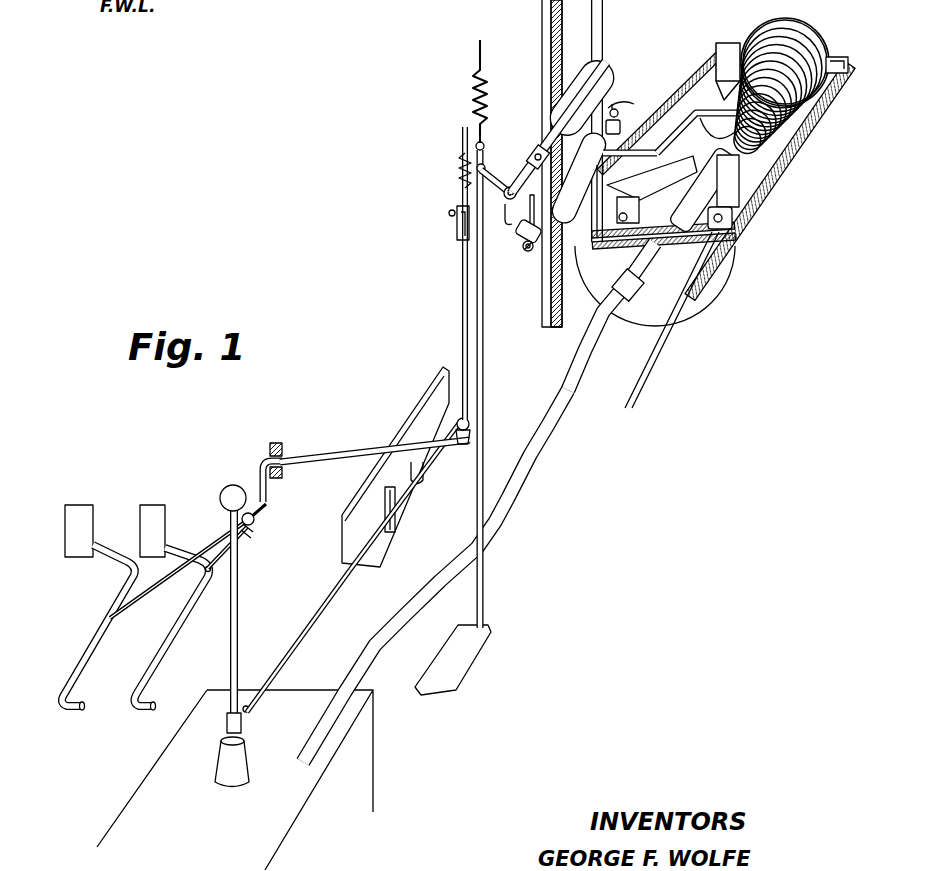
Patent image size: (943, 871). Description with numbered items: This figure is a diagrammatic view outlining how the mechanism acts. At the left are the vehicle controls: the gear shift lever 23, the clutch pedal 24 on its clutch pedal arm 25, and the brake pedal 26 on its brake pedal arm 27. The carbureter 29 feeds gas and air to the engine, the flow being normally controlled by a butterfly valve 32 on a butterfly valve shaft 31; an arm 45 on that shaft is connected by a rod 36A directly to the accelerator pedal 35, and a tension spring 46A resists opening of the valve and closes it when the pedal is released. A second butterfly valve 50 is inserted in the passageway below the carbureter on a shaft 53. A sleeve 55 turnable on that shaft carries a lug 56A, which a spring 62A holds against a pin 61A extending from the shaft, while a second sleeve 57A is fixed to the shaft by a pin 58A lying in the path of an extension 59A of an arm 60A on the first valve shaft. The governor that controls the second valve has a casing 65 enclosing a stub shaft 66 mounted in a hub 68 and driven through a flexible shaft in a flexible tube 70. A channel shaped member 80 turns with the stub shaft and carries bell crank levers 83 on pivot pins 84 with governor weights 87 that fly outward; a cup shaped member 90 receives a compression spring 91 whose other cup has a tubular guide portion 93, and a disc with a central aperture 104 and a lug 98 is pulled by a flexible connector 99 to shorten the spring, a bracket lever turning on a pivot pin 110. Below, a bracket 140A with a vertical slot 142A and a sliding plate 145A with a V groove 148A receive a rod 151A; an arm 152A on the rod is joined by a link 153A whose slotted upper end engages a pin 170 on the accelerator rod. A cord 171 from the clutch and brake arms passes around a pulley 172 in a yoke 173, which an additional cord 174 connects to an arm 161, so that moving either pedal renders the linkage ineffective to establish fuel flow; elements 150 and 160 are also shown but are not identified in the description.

The gear shift lever 23 is at (239, 636).
The clutch pedal 24 is at (80, 505).
The clutch pedal arm 25 is at (112, 596).
The brake pedal 26 is at (148, 505).
The brake pedal arm 27 is at (178, 638).
The carbureter 29 is at (613, 7).
The butterfly valve shaft 31 is at (590, 78).
The butterfly valve 32 is at (603, 92).
The accelerator pedal 35 is at (462, 662).
The rod 36A is at (483, 337).
The arm 45 is at (503, 172).
The tension spring 46A is at (471, 102).
The second butterfly valve 50 is at (570, 213).
The shaft 53 is at (527, 252).
The sleeve 55 is at (612, 150).
The lug 56A is at (621, 124).
The second sleeve 57A is at (522, 249).
The pin 58A is at (520, 235).
The extension 59A is at (522, 222).
The arm 60A is at (500, 212).
The pin 61A is at (619, 111).
The spring 62A is at (620, 106).
The governor casing 65 is at (712, 280).
The stub shaft 66 is at (636, 276).
The hub 68 is at (642, 272).
The flexible tube 70 is at (552, 426).
The channel shaped member 80 is at (600, 250).
The bell crank levers 83 is at (735, 246).
The pivot pins 84 is at (745, 229).
The governor weights 87 is at (735, 192).
The cup shaped member 90 is at (778, 160).
The compression spring 91 is at (790, 120).
The tubular guide portion 93 is at (781, 22).
The lug 98 is at (838, 56).
The flexible connector 99 is at (740, 172).
The central aperture 104 is at (735, 112).
The pivot pin 110 is at (690, 95).
The bracket 140A is at (432, 412).
The vertical slot 142A is at (393, 450).
The sliding plate 145A is at (407, 494).
The V groove 148A is at (425, 476).
The rod 150 is at (316, 616).
The rod 151A is at (322, 458).
The arm 152A is at (472, 443).
The link 153A is at (462, 306).
The clamp 160 is at (270, 447).
The arm 161 is at (262, 480).
The pin 170 is at (449, 215).
The cord 171 is at (132, 597).
The pulley 172 is at (250, 530).
The yoke 173 is at (256, 522).
The cord 174 is at (266, 506).